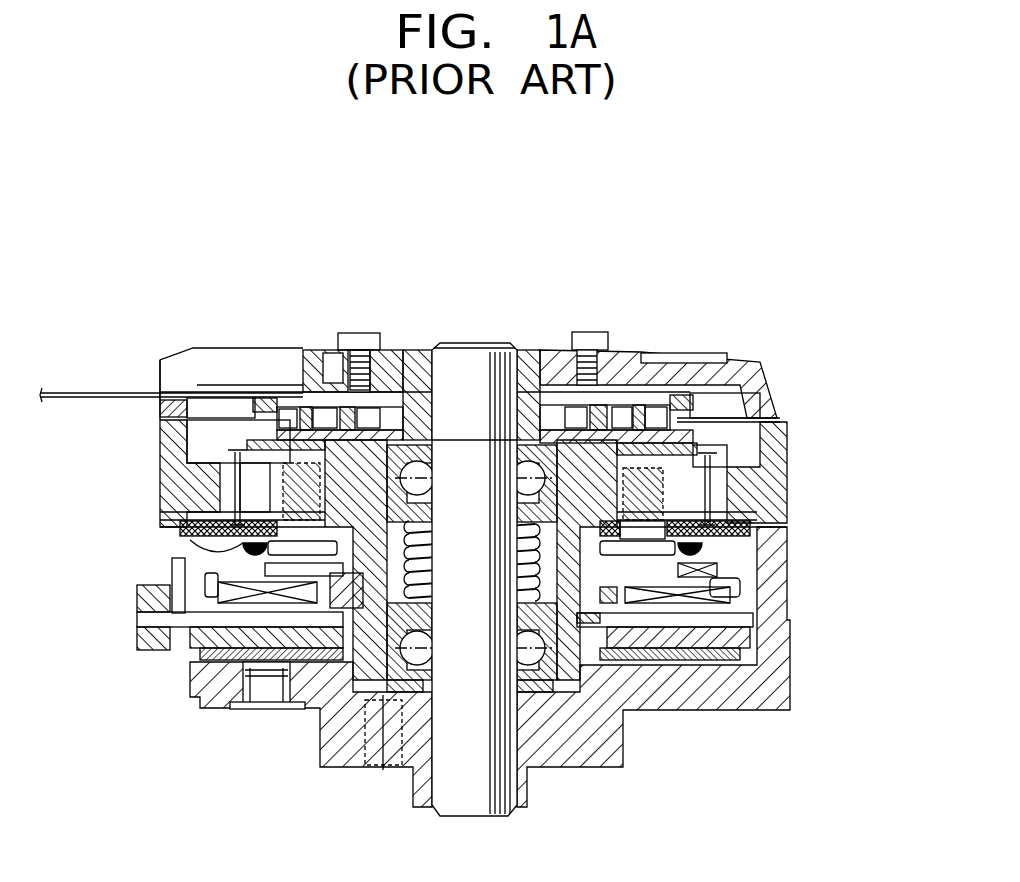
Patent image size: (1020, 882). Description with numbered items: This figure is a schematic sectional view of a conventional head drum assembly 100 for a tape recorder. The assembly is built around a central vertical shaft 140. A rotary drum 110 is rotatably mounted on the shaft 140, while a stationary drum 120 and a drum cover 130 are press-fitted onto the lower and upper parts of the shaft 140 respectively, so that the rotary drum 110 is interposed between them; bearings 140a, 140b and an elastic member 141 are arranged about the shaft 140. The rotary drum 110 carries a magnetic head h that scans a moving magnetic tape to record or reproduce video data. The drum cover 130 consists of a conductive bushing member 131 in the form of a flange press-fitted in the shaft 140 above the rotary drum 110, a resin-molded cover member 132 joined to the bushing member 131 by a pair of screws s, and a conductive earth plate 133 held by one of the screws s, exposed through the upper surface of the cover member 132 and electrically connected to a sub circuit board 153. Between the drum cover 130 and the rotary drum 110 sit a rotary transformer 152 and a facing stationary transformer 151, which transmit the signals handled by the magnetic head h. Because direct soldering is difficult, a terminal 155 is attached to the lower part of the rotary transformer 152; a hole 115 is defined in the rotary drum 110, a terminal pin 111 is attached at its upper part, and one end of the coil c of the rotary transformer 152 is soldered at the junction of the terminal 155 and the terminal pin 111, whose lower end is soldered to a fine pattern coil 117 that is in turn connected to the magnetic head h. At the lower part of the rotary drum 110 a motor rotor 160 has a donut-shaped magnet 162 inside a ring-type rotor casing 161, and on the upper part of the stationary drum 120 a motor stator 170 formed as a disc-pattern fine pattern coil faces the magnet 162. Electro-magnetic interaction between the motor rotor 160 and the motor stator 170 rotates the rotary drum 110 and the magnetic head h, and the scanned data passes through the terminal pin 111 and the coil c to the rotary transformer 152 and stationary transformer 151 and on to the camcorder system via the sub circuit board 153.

The head drum assembly 100 is at (490, 262).
The rotary drum 110 is at (800, 476).
The terminal pin 111 is at (230, 466).
The hole 115 is at (230, 497).
The fine pattern coil (FPC) 117 is at (187, 537).
The stationary drum 120 is at (805, 670).
The drum cover 130 is at (790, 376).
The bushing member 131 is at (423, 352).
The cover member 132 is at (233, 355).
The earth plate 133 is at (303, 353).
The shaft 140 is at (497, 342).
The bearing 140a is at (355, 482).
The bearing 140b is at (257, 708).
The elastic member 141 is at (350, 552).
The stationary transformer 151 is at (690, 397).
The rotary transformer 152 is at (690, 437).
The sub circuit board 153 is at (99, 392).
The terminal 155 is at (222, 440).
The motor rotor 160 is at (761, 589).
The rotor casing 161 is at (732, 588).
The magnet 162 is at (713, 595).
The motor stator 170 is at (713, 623).
The coil c is at (240, 447).
The magnetic head h is at (163, 527).
The screw s is at (353, 332).